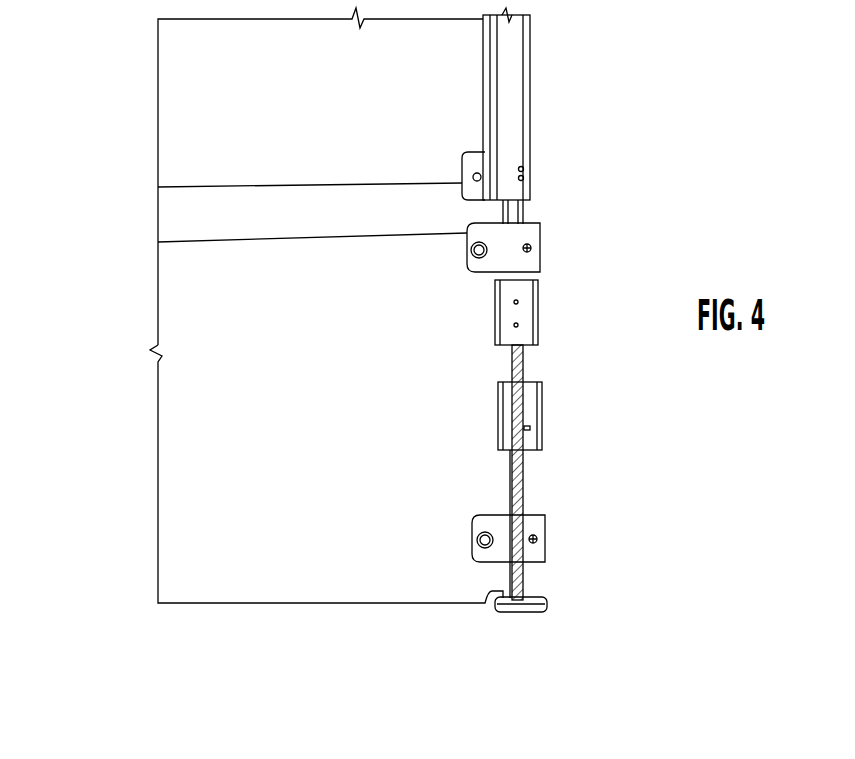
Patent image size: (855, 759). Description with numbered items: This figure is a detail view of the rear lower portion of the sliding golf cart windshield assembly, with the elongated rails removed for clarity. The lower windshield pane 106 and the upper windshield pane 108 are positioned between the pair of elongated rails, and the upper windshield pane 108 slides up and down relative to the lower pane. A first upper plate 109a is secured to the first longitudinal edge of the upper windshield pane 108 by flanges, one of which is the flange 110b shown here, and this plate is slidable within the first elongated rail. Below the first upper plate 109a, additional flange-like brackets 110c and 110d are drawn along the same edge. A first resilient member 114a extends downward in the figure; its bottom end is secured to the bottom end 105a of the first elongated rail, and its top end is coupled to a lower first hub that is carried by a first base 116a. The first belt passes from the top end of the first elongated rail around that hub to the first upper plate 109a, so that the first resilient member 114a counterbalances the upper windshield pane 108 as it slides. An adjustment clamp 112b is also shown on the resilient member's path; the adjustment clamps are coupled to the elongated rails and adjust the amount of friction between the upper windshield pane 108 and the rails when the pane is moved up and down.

The bottom end 105a is at (547, 606).
The lower windshield pane 106 is at (303, 578).
The upper windshield pane 108 is at (182, 97).
The first upper plate 109a is at (520, 84).
The flange 110b is at (470, 153).
The mounting bracket 110c is at (467, 262).
The mounting bracket 110d is at (487, 520).
The adjustment clamp 112b is at (542, 407).
The first resilient member 114a is at (525, 473).
The first base 116a is at (497, 340).